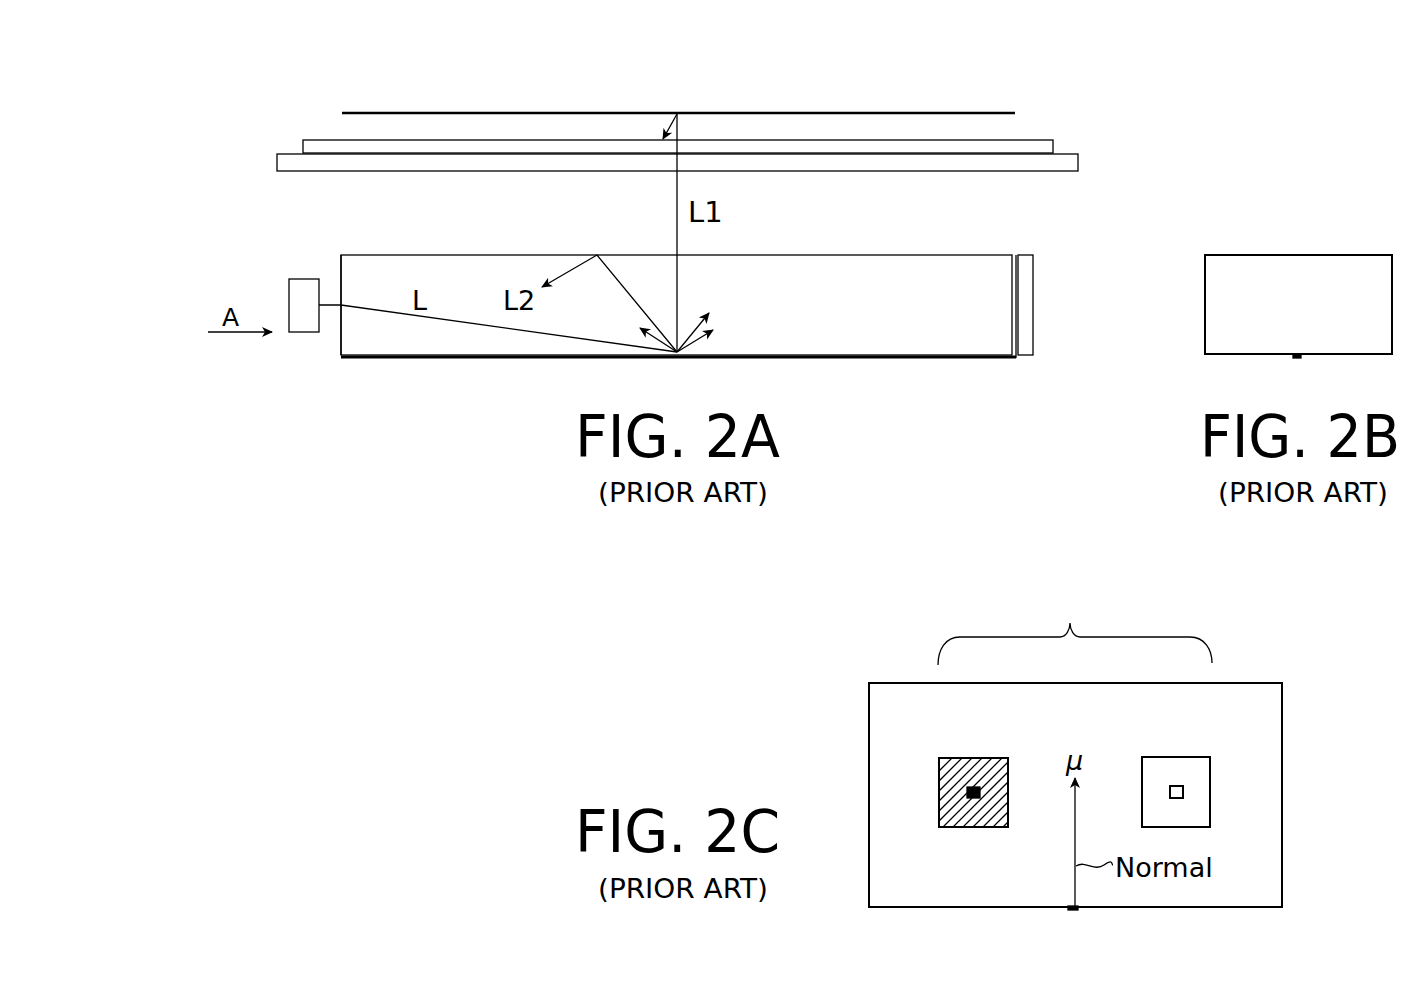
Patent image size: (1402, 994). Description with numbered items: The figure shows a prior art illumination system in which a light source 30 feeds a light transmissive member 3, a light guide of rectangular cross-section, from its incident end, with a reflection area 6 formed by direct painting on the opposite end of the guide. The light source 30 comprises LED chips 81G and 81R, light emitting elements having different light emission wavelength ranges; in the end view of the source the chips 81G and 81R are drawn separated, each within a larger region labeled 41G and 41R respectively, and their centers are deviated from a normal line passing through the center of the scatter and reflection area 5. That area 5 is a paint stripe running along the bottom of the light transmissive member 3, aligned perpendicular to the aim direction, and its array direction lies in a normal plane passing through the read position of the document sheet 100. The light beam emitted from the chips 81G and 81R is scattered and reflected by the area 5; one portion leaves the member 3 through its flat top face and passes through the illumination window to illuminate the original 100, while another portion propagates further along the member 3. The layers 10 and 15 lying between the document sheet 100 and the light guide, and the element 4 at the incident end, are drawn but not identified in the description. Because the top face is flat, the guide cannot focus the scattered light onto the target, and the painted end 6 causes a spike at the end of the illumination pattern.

In FIG. 2A, the document sheet 100 is at (342, 113).
In FIG. 2A, the diffusion sheet 10 is at (303, 146).
In FIG. 2A, the prism sheet 15 is at (277, 163).
In FIG. 2A, the light transmissive member 3 is at (957, 255).
In FIG. 2B, the light transmissive member 3 is at (1298, 255).
In FIG. 2C, the light transmissive member 3 is at (1282, 764).
In FIG. 2A, the light incident surface 4 is at (341, 262).
In FIG. 2A, the scatter and reflection area 5 is at (950, 362).
In FIG. 2B, the scatter and reflection area 5 is at (1297, 358).
In FIG. 2C, the scatter and reflection area 5 is at (1075, 910).
In FIG. 2A, the reflection area 6 is at (1027, 255).
In FIG. 2A, the light source 30 is at (304, 333).
In FIG. 2C, the light source 30 is at (1075, 628).
In FIG. 2C, the red light emitting element 41R is at (968, 758).
In FIG. 2C, the LED chip 81R is at (967, 792).
In FIG. 2C, the green light emitting element 41G is at (1173, 757).
In FIG. 2C, the LED chip 81G is at (1183, 792).